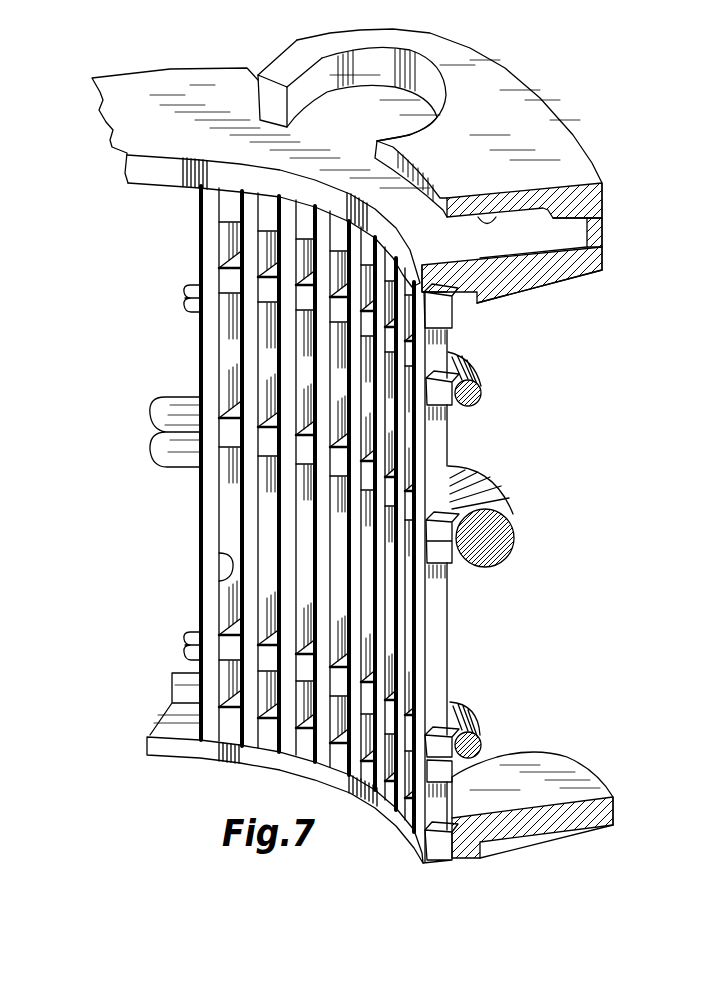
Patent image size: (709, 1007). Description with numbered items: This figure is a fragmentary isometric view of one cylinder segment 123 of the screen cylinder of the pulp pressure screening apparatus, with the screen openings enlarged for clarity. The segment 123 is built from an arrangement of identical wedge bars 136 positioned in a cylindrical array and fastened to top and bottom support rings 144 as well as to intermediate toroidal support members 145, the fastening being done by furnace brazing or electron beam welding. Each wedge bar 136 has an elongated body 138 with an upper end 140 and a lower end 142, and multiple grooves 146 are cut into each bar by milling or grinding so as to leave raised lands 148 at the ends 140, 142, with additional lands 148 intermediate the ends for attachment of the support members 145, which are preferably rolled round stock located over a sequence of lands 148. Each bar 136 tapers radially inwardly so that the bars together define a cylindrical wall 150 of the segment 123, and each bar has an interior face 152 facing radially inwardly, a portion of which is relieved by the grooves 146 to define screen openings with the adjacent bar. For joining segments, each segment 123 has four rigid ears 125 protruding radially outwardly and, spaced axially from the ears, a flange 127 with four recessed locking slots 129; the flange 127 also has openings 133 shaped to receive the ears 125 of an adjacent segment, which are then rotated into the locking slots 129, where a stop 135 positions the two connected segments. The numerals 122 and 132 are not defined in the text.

The filter cage 122 is at (448, 460).
The cylinder segment 123 is at (583, 120).
The rigid ear 125 is at (553, 757).
The flange 127 is at (557, 278).
The recessed locking slot 129 is at (502, 197).
The longitudinal rib 132 is at (220, 580).
The opening 133 is at (335, 102).
The stop 135 is at (595, 231).
The wedge bar 136 is at (452, 648).
The elongated body 138 is at (452, 620).
The upper end 140 is at (437, 280).
The lower end 142 is at (422, 863).
The support ring 144 is at (513, 284).
The intermediate toroidal support member 145 is at (481, 385).
The groove 146 is at (448, 343).
The raised land 148 is at (450, 332).
The cylindrical wall 150 is at (200, 537).
The interior face 152 is at (202, 617).